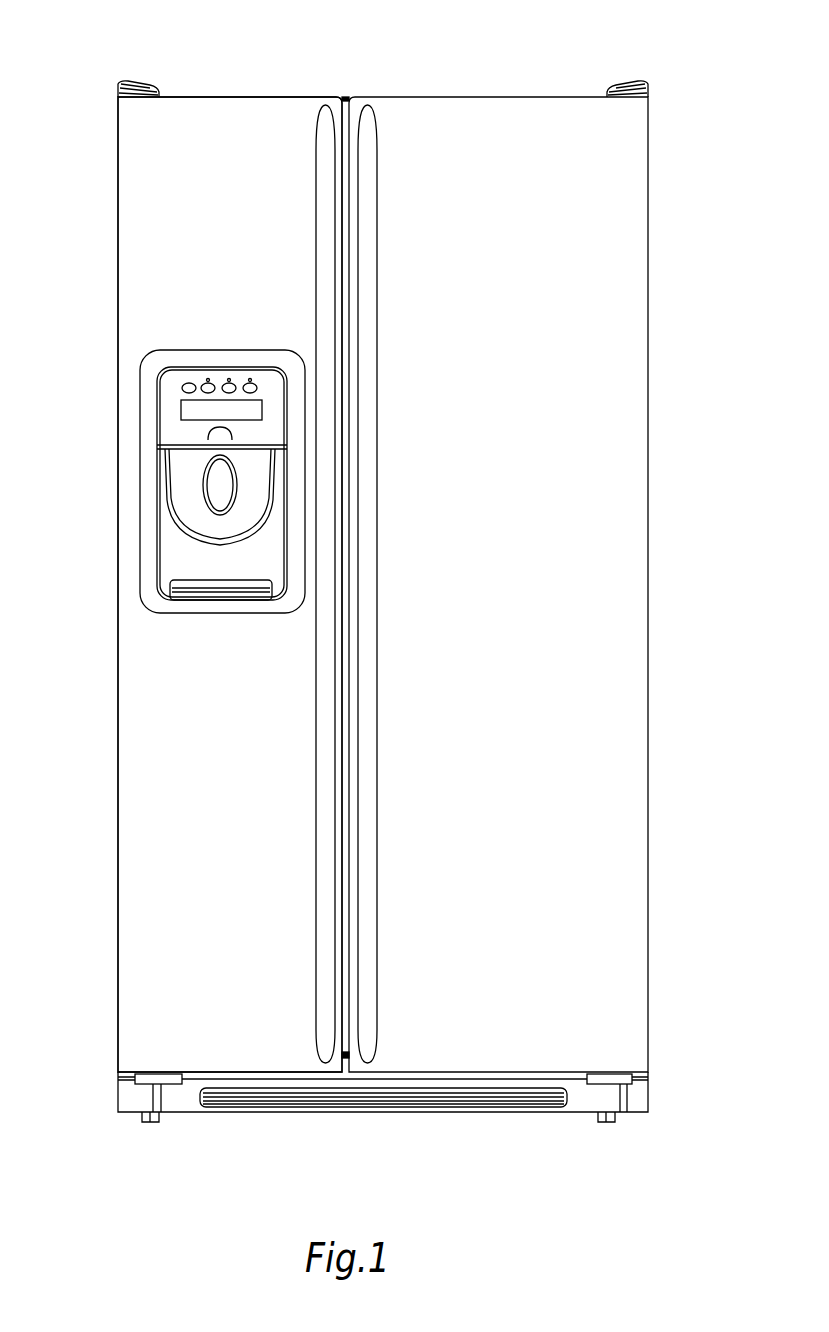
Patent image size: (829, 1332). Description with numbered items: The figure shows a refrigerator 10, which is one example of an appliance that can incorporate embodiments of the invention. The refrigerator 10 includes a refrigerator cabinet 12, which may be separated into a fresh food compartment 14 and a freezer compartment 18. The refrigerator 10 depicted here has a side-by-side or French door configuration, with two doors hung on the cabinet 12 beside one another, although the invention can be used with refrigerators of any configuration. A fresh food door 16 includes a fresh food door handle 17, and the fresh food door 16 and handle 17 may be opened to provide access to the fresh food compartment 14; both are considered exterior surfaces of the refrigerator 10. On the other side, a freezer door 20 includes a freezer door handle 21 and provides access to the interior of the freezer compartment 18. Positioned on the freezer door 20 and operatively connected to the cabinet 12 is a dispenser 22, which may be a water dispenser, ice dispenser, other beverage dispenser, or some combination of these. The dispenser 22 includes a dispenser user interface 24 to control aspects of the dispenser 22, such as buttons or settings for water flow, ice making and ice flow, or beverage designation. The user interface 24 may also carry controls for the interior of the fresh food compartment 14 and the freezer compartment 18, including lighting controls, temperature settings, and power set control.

The refrigerator 10 is at (626, 34).
The refrigerator cabinet 12 is at (648, 271).
The fresh food compartment 14 is at (531, 97).
The fresh food door 16 is at (612, 383).
The fresh food door handle 17 is at (370, 213).
The freezer compartment 18 is at (117, 192).
The freezer door 20 is at (173, 677).
The freezer door handle 21 is at (322, 213).
The dispenser 22 is at (150, 358).
The dispenser user interface 24 is at (238, 381).